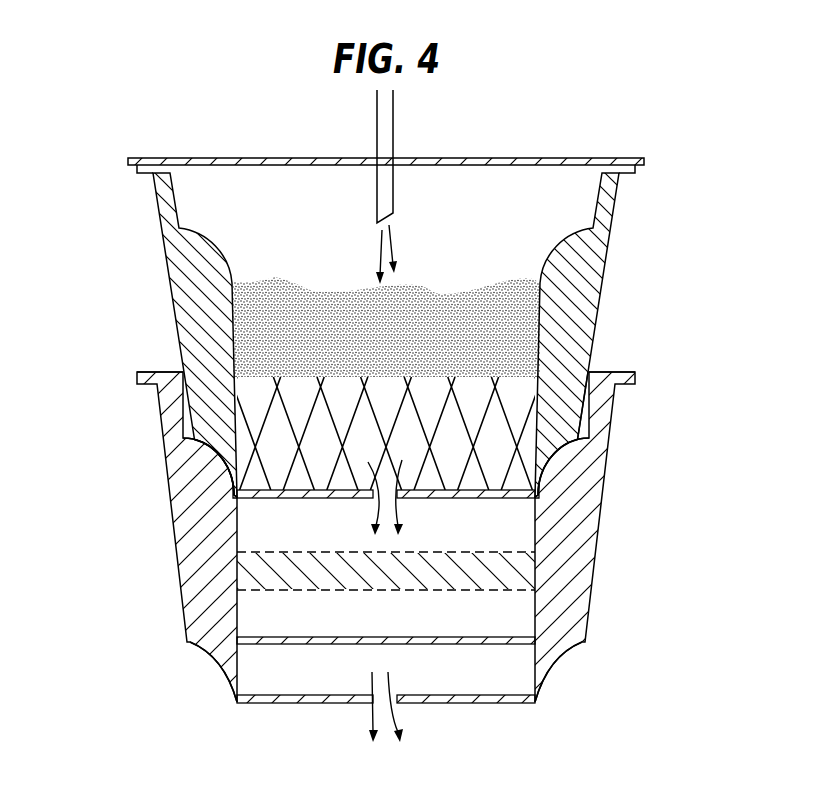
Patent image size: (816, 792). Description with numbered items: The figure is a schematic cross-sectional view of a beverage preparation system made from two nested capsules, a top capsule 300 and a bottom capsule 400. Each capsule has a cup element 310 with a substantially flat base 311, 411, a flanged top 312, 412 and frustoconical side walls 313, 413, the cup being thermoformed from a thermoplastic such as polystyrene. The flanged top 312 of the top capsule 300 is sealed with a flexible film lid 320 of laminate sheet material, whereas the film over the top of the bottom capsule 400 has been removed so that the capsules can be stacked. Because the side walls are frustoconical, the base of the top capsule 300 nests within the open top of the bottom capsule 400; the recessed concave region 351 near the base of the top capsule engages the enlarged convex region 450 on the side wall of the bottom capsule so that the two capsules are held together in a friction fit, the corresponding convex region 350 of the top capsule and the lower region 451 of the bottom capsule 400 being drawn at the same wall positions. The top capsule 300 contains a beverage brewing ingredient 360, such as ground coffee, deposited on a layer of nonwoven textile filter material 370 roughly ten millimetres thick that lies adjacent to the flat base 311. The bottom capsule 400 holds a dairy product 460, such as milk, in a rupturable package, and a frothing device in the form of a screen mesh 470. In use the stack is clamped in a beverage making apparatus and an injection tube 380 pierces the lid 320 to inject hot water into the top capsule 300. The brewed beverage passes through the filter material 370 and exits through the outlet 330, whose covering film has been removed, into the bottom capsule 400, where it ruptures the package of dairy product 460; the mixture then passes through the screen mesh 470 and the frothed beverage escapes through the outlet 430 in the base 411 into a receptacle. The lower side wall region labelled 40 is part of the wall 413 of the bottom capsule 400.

The capsule 300 is at (668, 254).
The cup element 310 is at (598, 312).
The base 311 is at (472, 498).
The flanged top 312 is at (637, 170).
The side walls 313 is at (582, 385).
The lid 320 is at (566, 158).
The outlet 330 is at (386, 528).
The enlarged convex region 350 is at (200, 272).
The recessed concave region 351 is at (205, 443).
The beverage brewing ingredient 360 is at (258, 330).
The filter material 370 is at (282, 458).
The injection tube 380 is at (377, 130).
The capsule 400 is at (642, 468).
The container wall 40 is at (598, 528).
The base 411 is at (275, 704).
The flanged top 412 is at (138, 378).
The side walls 413 is at (195, 588).
The outlet 430 is at (396, 740).
The enlarged convex region 450 is at (225, 463).
The curved bottom portion 451 is at (212, 662).
The dairy product 460 is at (513, 565).
The screen mesh 470 is at (513, 643).